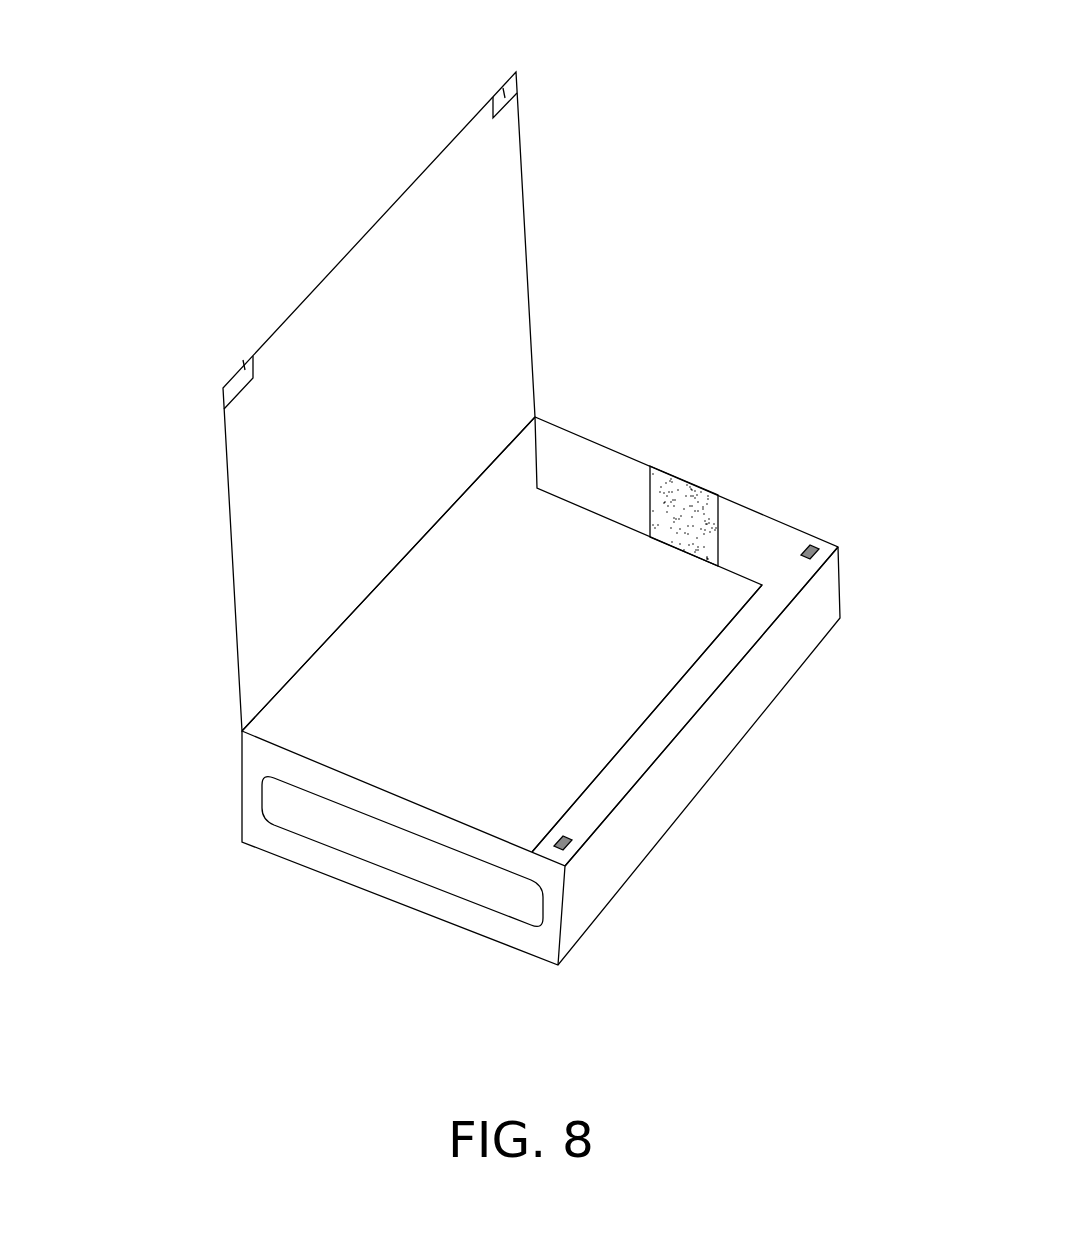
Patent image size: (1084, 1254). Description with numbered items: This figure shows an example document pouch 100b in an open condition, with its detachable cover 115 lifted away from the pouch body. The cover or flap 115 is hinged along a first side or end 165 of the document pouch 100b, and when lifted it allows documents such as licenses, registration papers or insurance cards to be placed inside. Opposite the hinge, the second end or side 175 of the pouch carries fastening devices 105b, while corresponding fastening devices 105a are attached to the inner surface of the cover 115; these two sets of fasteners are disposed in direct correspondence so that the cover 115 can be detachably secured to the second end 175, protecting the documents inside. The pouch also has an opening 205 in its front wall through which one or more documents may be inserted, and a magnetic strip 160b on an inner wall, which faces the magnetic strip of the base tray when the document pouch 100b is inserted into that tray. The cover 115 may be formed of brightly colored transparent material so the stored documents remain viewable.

The document pouch 100b is at (184, 696).
The fastening devices 105a is at (503, 93).
The fastening devices 105b is at (813, 543).
The cover 115 is at (493, 252).
The magnetic strip 160b is at (685, 497).
The first side or end 165 is at (242, 731).
The second end or side 175 is at (662, 728).
The opening 205 is at (470, 880).